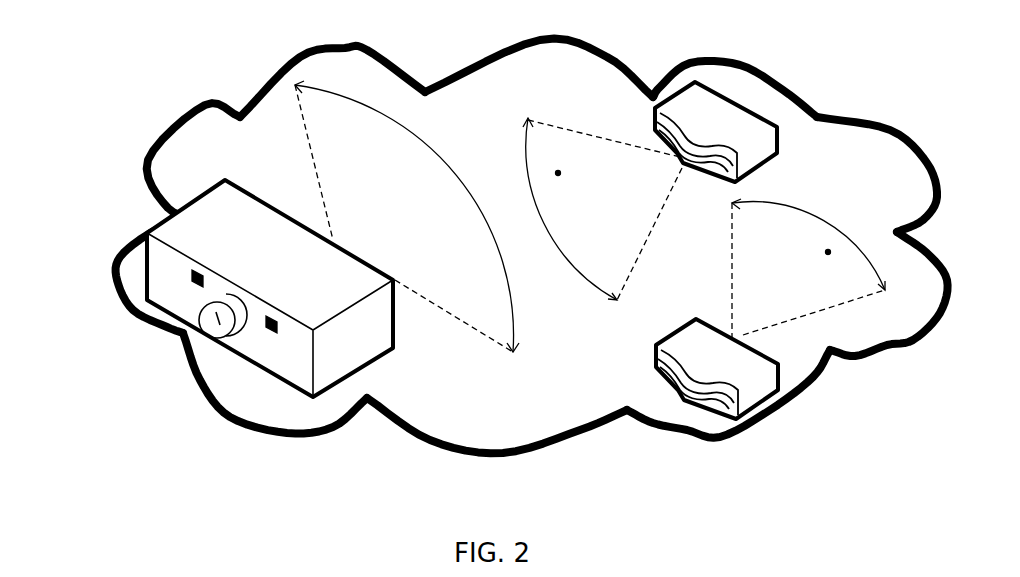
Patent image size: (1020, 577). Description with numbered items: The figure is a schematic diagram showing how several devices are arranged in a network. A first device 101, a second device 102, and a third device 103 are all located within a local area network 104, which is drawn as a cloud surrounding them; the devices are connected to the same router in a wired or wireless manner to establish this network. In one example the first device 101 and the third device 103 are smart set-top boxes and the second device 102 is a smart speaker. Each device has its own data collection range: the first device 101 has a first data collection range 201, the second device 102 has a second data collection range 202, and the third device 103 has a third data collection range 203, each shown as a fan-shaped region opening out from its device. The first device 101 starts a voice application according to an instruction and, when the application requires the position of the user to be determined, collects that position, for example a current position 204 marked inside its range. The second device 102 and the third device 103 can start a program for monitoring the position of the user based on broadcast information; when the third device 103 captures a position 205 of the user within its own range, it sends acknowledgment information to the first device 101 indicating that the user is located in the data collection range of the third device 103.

The first device 101 is at (722, 92).
The second device 102 is at (170, 280).
The third device 103 is at (710, 413).
The local area network 104 is at (423, 430).
The first data collection range 201 is at (602, 209).
The second data collection range 202 is at (407, 216).
The third data collection range 203 is at (808, 268).
The current position 204 is at (556, 173).
The position of the user 205 is at (828, 250).